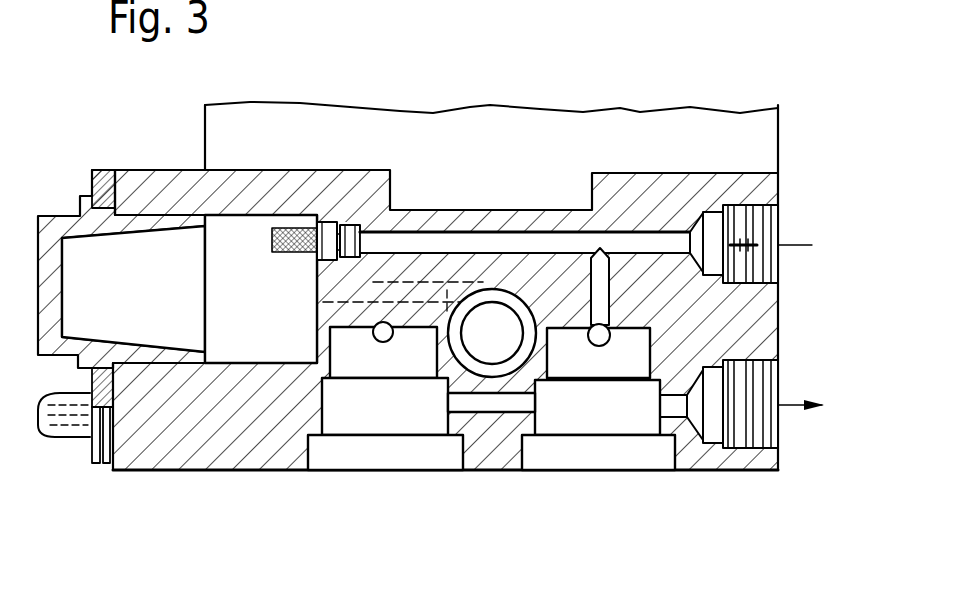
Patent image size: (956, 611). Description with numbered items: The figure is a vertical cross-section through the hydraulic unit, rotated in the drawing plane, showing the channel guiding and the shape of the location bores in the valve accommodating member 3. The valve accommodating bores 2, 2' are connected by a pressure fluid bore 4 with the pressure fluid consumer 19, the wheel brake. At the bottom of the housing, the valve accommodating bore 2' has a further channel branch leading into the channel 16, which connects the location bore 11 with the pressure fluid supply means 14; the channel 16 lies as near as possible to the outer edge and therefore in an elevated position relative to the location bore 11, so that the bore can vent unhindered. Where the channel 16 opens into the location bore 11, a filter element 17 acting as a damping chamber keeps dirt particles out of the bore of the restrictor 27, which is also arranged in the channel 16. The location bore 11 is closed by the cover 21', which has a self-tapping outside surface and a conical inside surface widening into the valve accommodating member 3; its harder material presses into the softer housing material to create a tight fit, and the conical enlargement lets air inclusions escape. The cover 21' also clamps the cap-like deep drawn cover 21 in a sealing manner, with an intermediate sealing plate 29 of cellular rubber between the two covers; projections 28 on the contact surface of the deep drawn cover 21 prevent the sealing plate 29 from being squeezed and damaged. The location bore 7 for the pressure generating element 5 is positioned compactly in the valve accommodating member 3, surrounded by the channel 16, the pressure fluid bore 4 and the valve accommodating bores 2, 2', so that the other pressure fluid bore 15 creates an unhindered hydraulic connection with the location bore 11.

The valve accommodating bore 2 is at (385, 435).
The valve accommodating bore 2' is at (598, 398).
The valve accommodating member 3 is at (163, 440).
The pressure fluid bore 4 is at (518, 402).
The pressure generating element 5 is at (483, 343).
The location bore 7 is at (508, 370).
The location bore 11 is at (268, 352).
The pressure fluid supply means 14 is at (795, 247).
The pressure fluid bore 15 is at (450, 378).
The channel 16 is at (530, 245).
The filter element 17 is at (293, 232).
The pressure fluid consumer 19 is at (783, 407).
The deep drawn cover 21 is at (119, 247).
The cover 21' is at (76, 461).
The restrictor 27 is at (383, 244).
The projections 28 is at (92, 387).
The intermediate sealing plate 29 is at (107, 206).